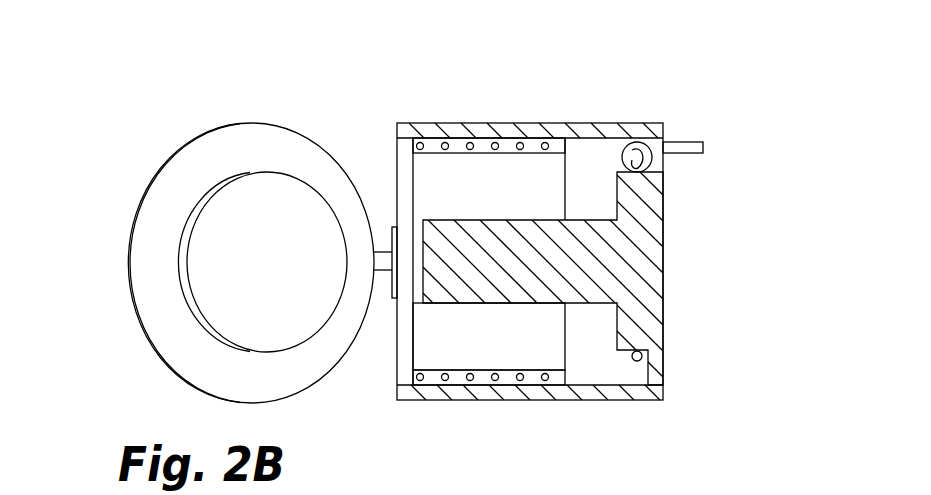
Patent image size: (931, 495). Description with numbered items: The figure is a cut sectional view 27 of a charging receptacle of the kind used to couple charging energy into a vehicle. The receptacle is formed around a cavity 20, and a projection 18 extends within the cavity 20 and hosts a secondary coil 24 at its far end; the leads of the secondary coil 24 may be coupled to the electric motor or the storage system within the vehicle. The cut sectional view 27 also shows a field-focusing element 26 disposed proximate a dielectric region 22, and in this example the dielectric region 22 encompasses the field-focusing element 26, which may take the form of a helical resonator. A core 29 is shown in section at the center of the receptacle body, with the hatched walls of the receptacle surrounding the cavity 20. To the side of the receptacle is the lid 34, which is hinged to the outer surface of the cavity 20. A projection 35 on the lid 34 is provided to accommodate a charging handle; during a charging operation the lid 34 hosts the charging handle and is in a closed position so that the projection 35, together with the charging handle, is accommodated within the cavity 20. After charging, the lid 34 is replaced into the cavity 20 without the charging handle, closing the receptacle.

The projection 18 is at (547, 282).
The cavity 20 is at (510, 347).
The dielectric region 22 is at (512, 140).
The secondary coil 24 is at (650, 142).
The field-focusing element 26 is at (500, 380).
The cut sectional view 27 is at (728, 75).
The core 29 is at (645, 283).
The lid 34 is at (117, 272).
The projection on the lid 35 is at (297, 323).